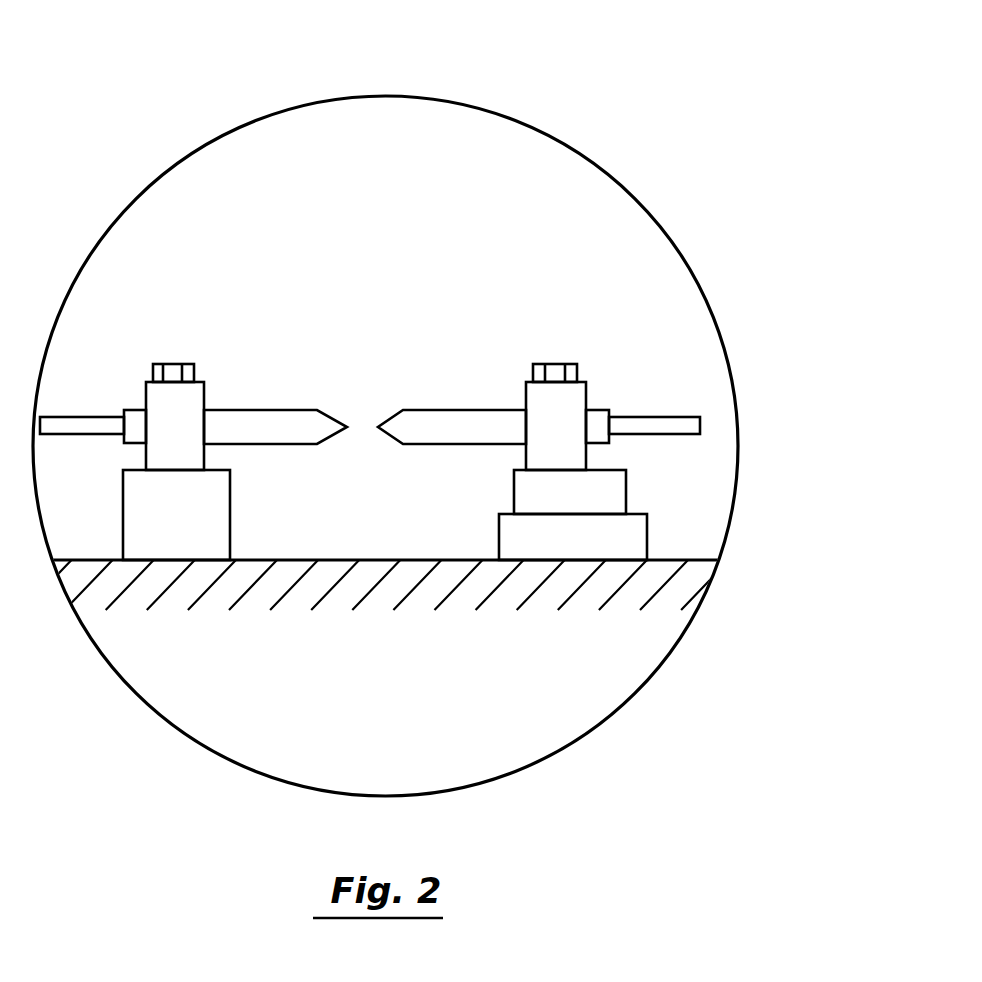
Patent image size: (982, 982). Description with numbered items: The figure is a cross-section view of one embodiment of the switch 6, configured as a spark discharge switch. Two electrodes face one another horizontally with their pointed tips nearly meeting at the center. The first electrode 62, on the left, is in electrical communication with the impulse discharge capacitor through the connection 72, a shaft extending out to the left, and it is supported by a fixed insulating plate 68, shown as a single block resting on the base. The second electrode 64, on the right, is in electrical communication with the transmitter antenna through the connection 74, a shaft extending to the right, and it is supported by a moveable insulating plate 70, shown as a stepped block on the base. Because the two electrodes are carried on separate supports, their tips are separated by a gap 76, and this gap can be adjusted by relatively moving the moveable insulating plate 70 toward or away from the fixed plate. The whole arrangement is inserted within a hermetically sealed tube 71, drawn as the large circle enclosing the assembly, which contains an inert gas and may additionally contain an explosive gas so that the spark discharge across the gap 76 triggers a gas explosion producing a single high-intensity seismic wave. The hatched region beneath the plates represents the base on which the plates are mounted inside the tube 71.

The switch 6 is at (553, 105).
The hermetically sealed tube 71 is at (645, 207).
The connection 72 is at (83, 417).
The first electrode 62 is at (275, 409).
The second electrode 64 is at (460, 409).
The fixed insulating plate 68 is at (230, 517).
The connection 74 is at (647, 417).
The moveable insulating plate 70 is at (652, 560).
The gap 76 is at (363, 444).